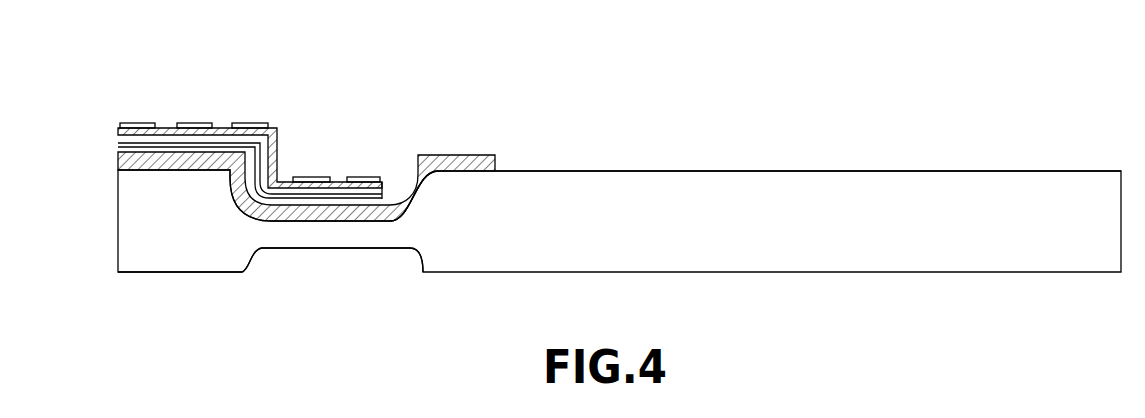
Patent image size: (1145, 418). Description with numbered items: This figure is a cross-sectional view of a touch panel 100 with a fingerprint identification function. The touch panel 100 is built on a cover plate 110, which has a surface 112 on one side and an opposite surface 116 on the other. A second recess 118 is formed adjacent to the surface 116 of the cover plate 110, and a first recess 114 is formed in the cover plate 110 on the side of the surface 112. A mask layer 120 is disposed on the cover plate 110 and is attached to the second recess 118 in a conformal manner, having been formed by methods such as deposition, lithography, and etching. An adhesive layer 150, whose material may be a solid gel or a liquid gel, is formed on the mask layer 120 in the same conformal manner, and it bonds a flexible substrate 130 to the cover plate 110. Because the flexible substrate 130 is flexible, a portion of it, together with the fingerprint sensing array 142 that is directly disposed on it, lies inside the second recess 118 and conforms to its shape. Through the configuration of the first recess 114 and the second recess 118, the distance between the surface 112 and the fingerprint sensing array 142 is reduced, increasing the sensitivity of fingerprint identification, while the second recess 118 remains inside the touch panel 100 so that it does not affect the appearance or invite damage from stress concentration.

The touch panel 100 is at (77, 28).
The cover plate 110 is at (127, 232).
The surface 112 is at (128, 274).
The first recess 114 is at (353, 272).
The surface 116 is at (865, 170).
The second recess 118 is at (402, 157).
The mask layer 120 is at (118, 160).
The flexible substrate 130 is at (118, 133).
The fingerprint sensing array 142 is at (276, 168).
The adhesive layer 150 is at (118, 147).